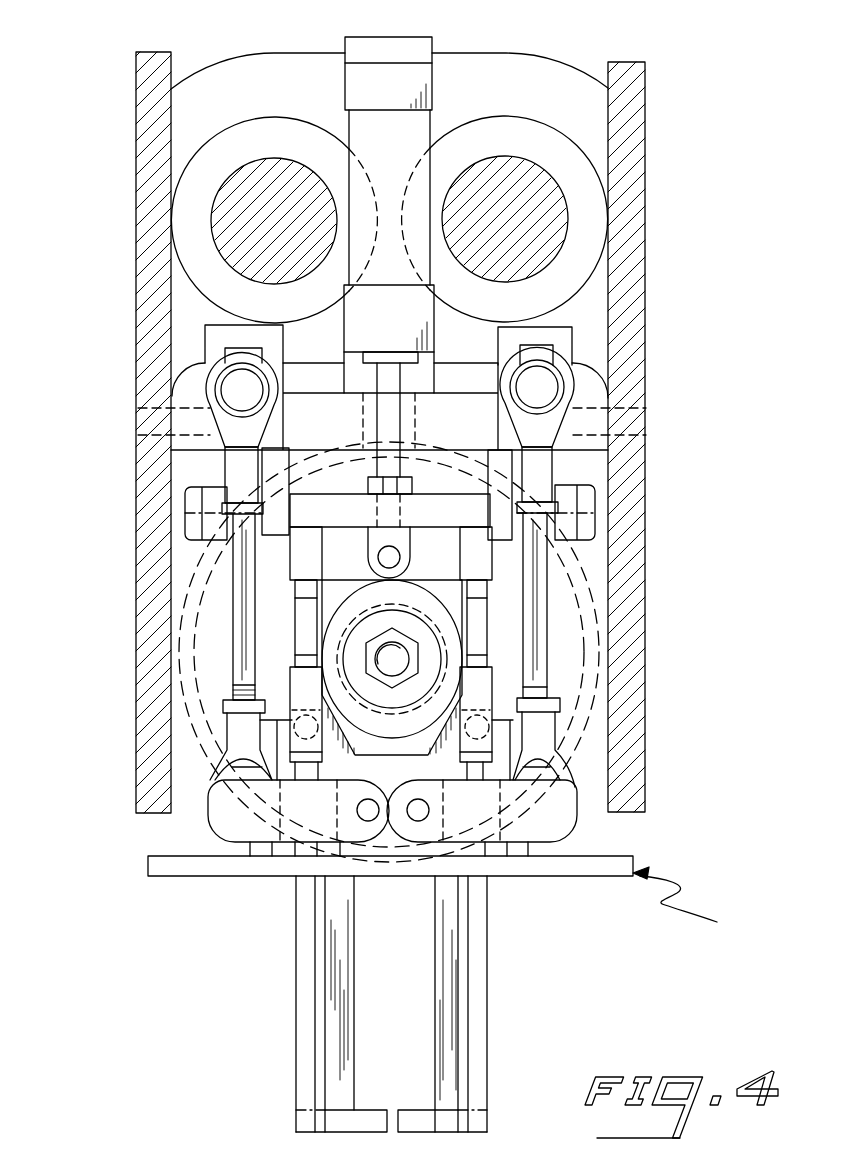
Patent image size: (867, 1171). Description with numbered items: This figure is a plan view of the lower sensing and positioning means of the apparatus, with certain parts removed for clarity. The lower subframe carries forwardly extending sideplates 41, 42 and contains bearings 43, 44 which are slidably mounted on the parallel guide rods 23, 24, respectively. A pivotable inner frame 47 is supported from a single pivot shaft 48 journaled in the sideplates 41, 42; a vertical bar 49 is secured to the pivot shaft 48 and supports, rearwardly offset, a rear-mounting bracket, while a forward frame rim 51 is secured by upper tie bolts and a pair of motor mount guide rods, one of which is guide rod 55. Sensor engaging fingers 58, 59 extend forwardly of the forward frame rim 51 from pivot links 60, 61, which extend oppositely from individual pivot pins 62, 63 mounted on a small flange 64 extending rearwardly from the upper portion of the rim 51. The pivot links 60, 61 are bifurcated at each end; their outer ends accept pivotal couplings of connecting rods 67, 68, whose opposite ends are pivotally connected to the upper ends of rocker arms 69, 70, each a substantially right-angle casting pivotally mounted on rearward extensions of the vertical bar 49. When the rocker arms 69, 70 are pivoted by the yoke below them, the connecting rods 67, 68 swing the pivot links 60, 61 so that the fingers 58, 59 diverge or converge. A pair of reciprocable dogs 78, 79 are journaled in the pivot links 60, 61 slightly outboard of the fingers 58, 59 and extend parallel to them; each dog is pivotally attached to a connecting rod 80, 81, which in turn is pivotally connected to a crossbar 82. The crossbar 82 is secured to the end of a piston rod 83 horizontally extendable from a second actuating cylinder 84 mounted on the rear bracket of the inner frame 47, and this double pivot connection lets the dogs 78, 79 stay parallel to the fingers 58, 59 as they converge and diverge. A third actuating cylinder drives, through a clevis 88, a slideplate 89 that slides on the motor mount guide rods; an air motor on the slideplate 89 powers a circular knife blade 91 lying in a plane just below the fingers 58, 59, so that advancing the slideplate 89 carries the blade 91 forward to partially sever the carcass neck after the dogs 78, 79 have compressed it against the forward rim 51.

The guide rod 23 is at (278, 232).
The guide rod 24 is at (512, 231).
The sideplate 41 is at (145, 518).
The sideplate 42 is at (645, 690).
The bearing 43 is at (183, 188).
The bearing 44 is at (600, 190).
The pivotable inner frame 47 is at (690, 902).
The pivot shaft 48 is at (183, 443).
The vertical bar 49 is at (312, 436).
The forward frame rim 51 is at (593, 877).
The motor mount guide rod 55 is at (500, 463).
The sensor engaging finger 58 is at (355, 1005).
The sensor engaging finger 59 is at (435, 1043).
The pivot link 60 is at (277, 852).
The pivot link 61 is at (500, 823).
The pivot pin 62 is at (370, 821).
The pivot pin 63 is at (420, 822).
The flange 64 is at (418, 846).
The connecting rod 67 is at (233, 633).
The connecting rod 68 is at (548, 637).
The rocker arm 69 is at (212, 338).
The rocker arm 70 is at (568, 343).
The reciprocable dog 78 is at (297, 1123).
The reciprocable dog 79 is at (487, 1106).
The connecting rod 80 is at (292, 603).
The connecting rod 81 is at (487, 607).
The crossbar 82 is at (354, 524).
The piston rod 83 is at (412, 481).
The second actuating cylinder 84 is at (390, 149).
The clevis 88 is at (410, 560).
The slideplate 89 is at (352, 585).
The circular knife blade 91 is at (195, 760).